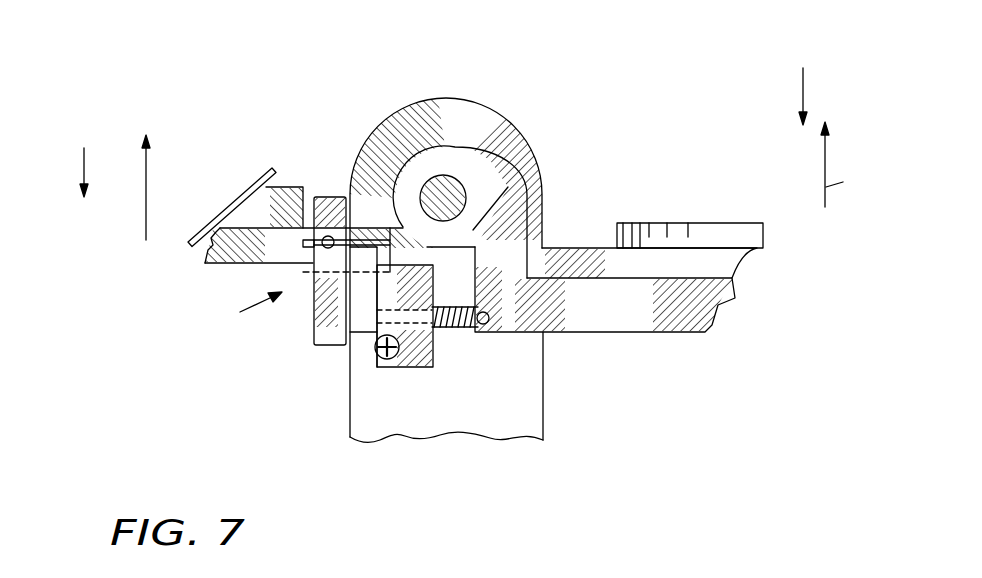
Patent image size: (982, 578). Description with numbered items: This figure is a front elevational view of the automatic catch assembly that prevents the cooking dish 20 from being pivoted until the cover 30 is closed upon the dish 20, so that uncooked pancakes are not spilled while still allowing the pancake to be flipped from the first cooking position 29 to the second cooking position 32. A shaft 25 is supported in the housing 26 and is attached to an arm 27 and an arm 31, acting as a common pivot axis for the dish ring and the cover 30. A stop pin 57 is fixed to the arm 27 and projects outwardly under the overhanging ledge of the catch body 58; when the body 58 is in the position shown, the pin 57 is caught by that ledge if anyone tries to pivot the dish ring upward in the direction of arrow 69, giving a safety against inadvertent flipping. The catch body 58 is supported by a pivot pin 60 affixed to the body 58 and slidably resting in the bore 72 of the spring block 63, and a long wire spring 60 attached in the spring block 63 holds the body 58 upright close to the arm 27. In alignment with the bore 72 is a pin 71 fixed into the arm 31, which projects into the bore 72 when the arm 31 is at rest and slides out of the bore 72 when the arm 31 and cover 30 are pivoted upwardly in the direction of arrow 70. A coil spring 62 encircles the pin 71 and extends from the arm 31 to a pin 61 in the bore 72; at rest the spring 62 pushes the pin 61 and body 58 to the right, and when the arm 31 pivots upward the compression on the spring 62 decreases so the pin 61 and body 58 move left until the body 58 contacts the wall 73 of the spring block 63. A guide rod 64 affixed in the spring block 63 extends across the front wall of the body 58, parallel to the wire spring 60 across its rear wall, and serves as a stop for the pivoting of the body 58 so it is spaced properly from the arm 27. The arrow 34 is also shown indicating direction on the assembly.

The cooking dish 20 is at (237, 210).
The shaft 25 is at (462, 172).
The housing 26 is at (445, 107).
The arm 27 is at (287, 190).
The first cooking position 29 is at (88, 154).
The cover 30 is at (705, 233).
The arm 31 is at (587, 327).
The second cooking position 32 is at (801, 78).
The direction arrow 34 is at (242, 317).
The stop pin 57 is at (340, 195).
The catch body 58 is at (330, 327).
The pivot pin / wire spring 60 is at (313, 254).
The pin 61 is at (337, 348).
The coil spring 62 is at (438, 322).
The spring block 63 is at (405, 367).
The guide rod 64 is at (385, 227).
The arrow 69 is at (146, 200).
The arrow 70 is at (854, 164).
The pin 71 is at (490, 323).
The bore 72 is at (405, 365).
The wall 73 is at (373, 357).